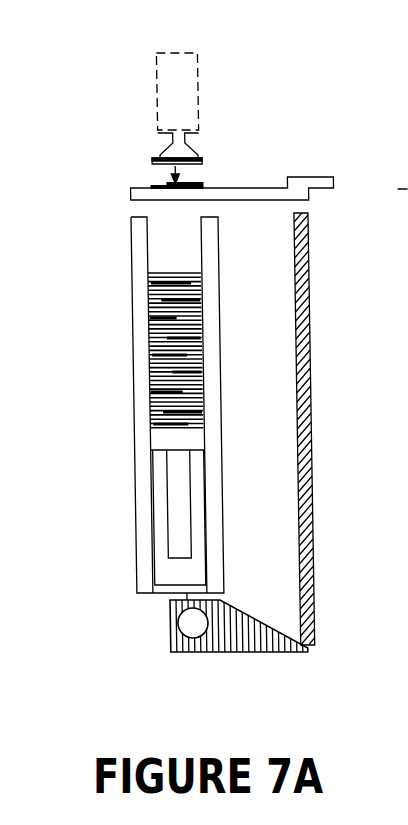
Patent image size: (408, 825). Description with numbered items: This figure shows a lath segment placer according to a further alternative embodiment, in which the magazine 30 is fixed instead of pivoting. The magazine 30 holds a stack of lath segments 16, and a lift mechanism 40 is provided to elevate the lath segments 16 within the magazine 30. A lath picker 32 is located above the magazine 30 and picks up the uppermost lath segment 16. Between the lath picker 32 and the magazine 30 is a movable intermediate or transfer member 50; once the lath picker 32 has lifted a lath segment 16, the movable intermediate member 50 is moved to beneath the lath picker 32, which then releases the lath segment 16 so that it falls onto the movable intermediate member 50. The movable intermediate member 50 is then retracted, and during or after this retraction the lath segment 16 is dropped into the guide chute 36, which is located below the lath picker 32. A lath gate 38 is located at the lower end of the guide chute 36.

The lath segment 16 is at (167, 185).
The magazine 30 is at (138, 282).
The lath picker 32 is at (159, 92).
The guide chute 36 is at (273, 297).
The lath gate 38 is at (275, 652).
The lift mechanism 40 is at (175, 440).
The movable intermediate member 50 is at (244, 188).